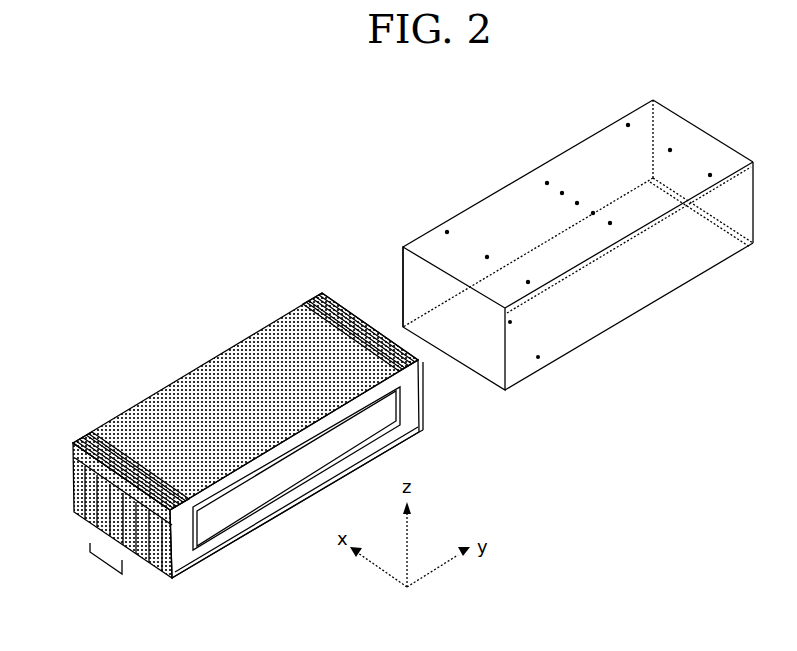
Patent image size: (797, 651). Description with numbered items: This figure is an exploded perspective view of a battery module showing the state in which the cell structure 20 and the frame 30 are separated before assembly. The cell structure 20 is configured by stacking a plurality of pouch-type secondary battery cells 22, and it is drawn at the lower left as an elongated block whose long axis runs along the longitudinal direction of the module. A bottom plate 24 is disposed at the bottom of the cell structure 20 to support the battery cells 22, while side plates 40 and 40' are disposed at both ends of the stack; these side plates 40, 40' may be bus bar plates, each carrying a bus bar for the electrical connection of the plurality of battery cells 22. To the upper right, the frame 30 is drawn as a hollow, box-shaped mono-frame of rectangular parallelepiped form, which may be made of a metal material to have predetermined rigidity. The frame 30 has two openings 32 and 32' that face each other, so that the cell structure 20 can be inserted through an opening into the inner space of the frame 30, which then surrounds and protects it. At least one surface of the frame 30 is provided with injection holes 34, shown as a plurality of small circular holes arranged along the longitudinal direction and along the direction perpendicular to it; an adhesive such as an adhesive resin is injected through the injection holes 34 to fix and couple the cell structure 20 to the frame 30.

The cell structure 20 is at (236, 415).
The battery cells 22 is at (222, 377).
The bottom plate 24 is at (173, 578).
The frame 30 is at (565, 228).
The opening 32 is at (515, 213).
The opening 32' is at (629, 189).
The injection hole 34 is at (486, 254).
The side plate 40 is at (119, 472).
The side plate 40' is at (360, 301).